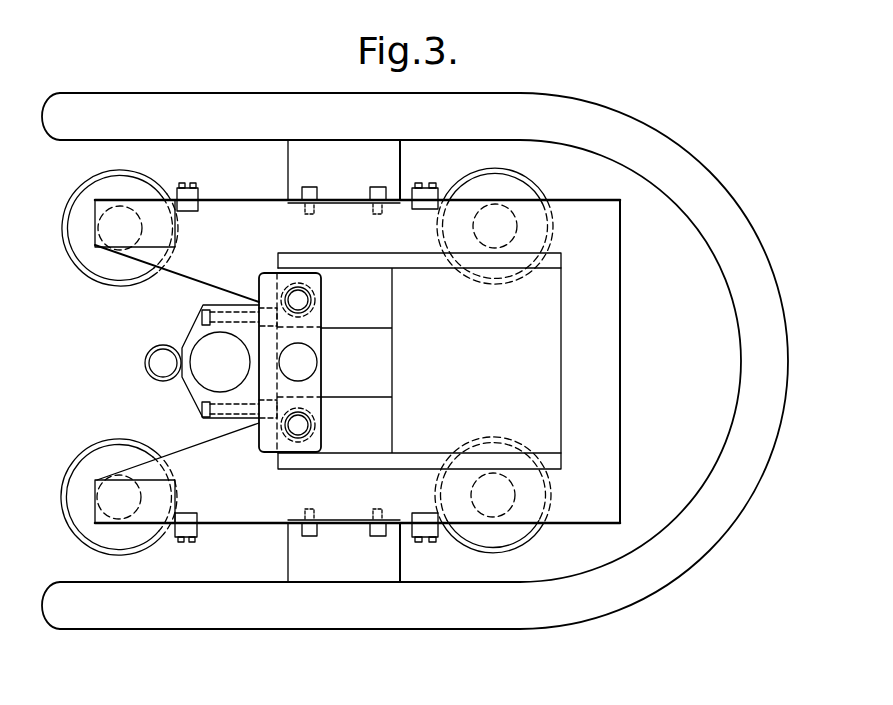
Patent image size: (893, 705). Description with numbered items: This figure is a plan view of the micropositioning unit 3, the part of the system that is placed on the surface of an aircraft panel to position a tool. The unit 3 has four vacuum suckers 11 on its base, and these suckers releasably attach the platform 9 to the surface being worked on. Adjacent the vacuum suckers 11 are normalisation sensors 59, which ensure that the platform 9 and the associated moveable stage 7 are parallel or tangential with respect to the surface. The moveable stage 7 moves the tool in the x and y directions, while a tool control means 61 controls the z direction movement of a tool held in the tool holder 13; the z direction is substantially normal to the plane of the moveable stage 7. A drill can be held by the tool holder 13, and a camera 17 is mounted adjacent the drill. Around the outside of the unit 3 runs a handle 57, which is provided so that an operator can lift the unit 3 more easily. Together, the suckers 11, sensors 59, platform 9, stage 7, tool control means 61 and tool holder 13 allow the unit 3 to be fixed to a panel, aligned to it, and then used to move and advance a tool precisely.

The micropositioning unit 3 is at (738, 171).
The moveable stage 7 is at (542, 415).
The platform 9 is at (593, 338).
The vacuum suckers 11 is at (528, 541).
The tool holder 13 is at (203, 340).
The camera 17 is at (150, 376).
The handle 57 is at (472, 614).
The normalisation sensors 59 is at (200, 531).
The tool control means 61 is at (308, 382).